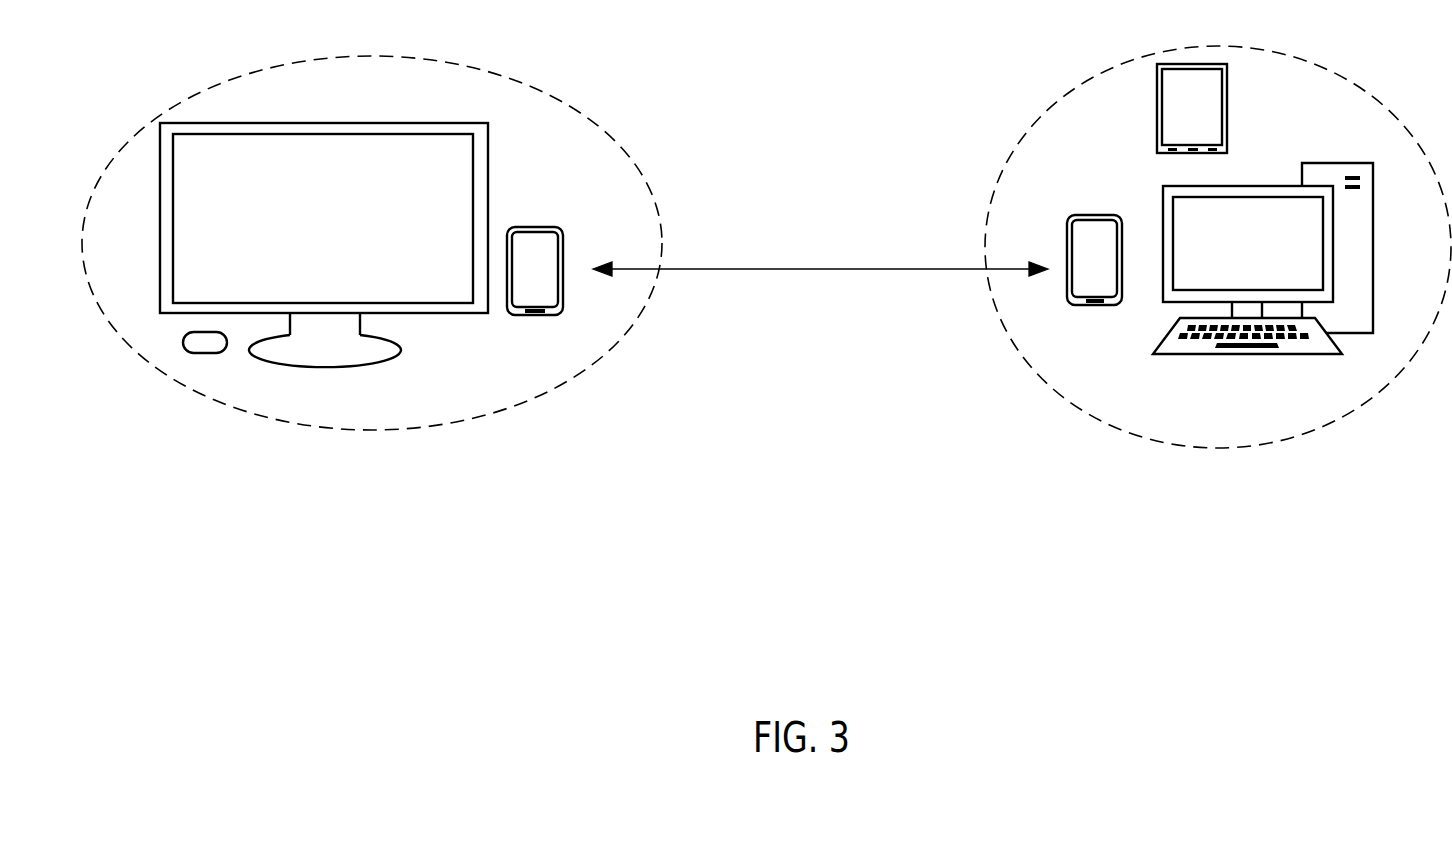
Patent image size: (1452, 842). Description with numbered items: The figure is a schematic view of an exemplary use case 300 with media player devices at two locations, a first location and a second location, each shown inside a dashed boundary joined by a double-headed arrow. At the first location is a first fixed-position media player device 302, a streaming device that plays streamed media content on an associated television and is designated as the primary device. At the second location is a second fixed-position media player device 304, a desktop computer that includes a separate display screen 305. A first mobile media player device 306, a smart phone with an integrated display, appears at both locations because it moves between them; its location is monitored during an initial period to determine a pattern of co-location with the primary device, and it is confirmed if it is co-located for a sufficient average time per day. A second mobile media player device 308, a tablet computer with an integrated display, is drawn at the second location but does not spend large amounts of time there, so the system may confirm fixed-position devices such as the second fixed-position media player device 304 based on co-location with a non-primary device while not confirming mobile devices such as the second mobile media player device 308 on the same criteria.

The use case 300 is at (833, 672).
The first fixed-position media player device 302 is at (182, 336).
The second fixed-position media player device 304 is at (1374, 218).
The display screen 305 is at (1248, 186).
The first mobile media player device 306 is at (524, 227).
The second mobile media player device 308 is at (1228, 100).